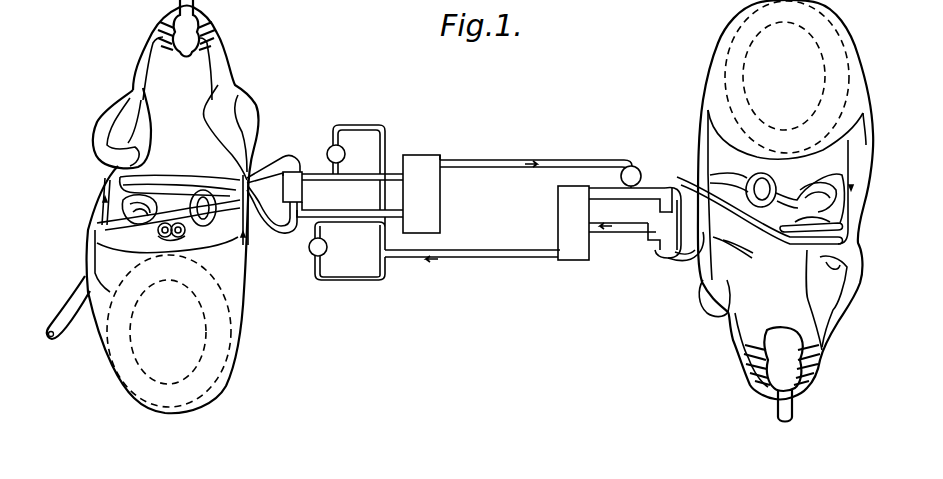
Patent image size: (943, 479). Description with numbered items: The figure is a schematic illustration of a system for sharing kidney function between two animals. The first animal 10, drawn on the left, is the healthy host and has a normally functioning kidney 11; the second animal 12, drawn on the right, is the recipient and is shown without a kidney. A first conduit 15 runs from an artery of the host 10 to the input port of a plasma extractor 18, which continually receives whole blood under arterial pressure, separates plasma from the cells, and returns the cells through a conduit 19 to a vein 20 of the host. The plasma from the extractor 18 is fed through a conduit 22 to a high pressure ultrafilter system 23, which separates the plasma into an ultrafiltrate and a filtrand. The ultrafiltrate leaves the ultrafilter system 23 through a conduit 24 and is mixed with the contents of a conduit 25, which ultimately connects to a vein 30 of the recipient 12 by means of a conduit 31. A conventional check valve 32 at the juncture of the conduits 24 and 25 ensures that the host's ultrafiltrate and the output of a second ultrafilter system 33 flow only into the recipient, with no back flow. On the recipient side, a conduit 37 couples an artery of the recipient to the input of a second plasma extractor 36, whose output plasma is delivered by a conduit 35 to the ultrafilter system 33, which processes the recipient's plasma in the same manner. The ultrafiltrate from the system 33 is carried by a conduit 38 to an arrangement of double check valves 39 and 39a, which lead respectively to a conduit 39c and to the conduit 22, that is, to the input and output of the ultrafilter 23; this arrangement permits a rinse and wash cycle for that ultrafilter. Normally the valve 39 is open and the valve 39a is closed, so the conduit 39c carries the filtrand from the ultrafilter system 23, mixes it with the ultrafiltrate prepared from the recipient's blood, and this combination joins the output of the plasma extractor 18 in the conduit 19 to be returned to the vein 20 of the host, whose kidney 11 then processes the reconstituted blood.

The first animal 10 is at (242, 360).
The kidney 11 is at (205, 249).
The second animal 12 is at (723, 347).
The first conduit 15 is at (268, 166).
The plasma extractor 18 is at (320, 100).
The conduit 19 is at (290, 236).
The vein 20 is at (93, 203).
The conduit 22 is at (394, 168).
The ultrafilter system 23 is at (442, 155).
The conduit 24 is at (518, 162).
The conduit 25 is at (593, 205).
The vein 30 is at (863, 188).
The conduit 31 is at (700, 186).
The check valve 32 is at (622, 162).
The second ultrafilter system 33 is at (527, 215).
The conduit 35 is at (622, 234).
The second plasma extractor 36 is at (652, 248).
The conduit 37 is at (680, 262).
The conduit 38 is at (500, 258).
The check valve 39 is at (328, 247).
The check valve 39a is at (345, 145).
The conduit 39c is at (312, 213).